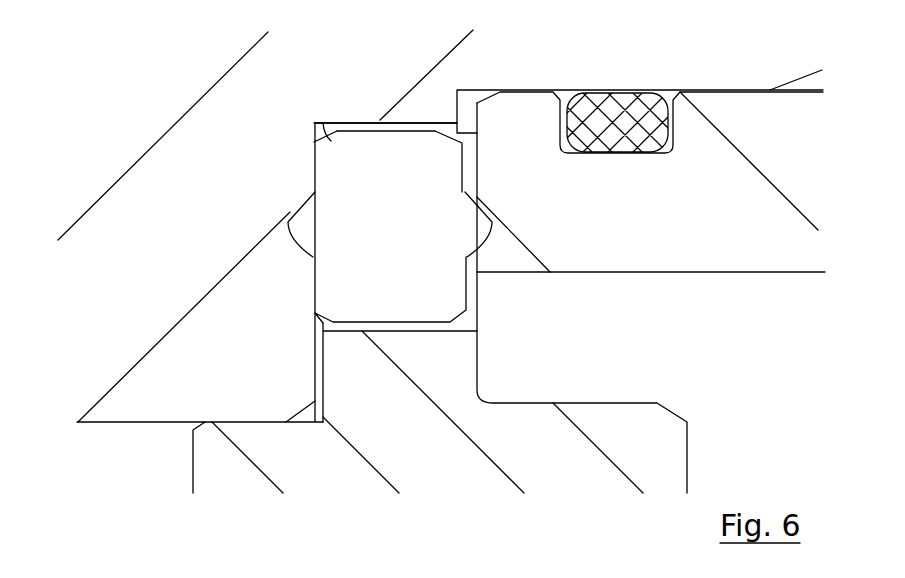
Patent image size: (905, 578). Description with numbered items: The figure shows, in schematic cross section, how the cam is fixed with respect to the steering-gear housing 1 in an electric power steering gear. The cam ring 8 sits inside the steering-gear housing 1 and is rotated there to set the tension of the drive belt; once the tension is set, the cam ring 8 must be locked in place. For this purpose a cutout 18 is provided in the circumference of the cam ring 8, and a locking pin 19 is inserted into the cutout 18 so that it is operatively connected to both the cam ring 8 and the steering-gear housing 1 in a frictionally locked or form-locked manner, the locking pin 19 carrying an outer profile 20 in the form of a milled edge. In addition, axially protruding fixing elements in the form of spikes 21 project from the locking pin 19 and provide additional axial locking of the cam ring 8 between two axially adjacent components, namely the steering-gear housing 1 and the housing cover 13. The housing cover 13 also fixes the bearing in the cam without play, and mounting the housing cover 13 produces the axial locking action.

The steering-gear housing 1 is at (164, 267).
The cam ring 8 is at (412, 444).
The housing cover 13 is at (654, 225).
The cutout 18 is at (333, 128).
The locking pin 19 is at (414, 242).
The outer profile 20 is at (367, 125).
The spikes 21 is at (300, 222).